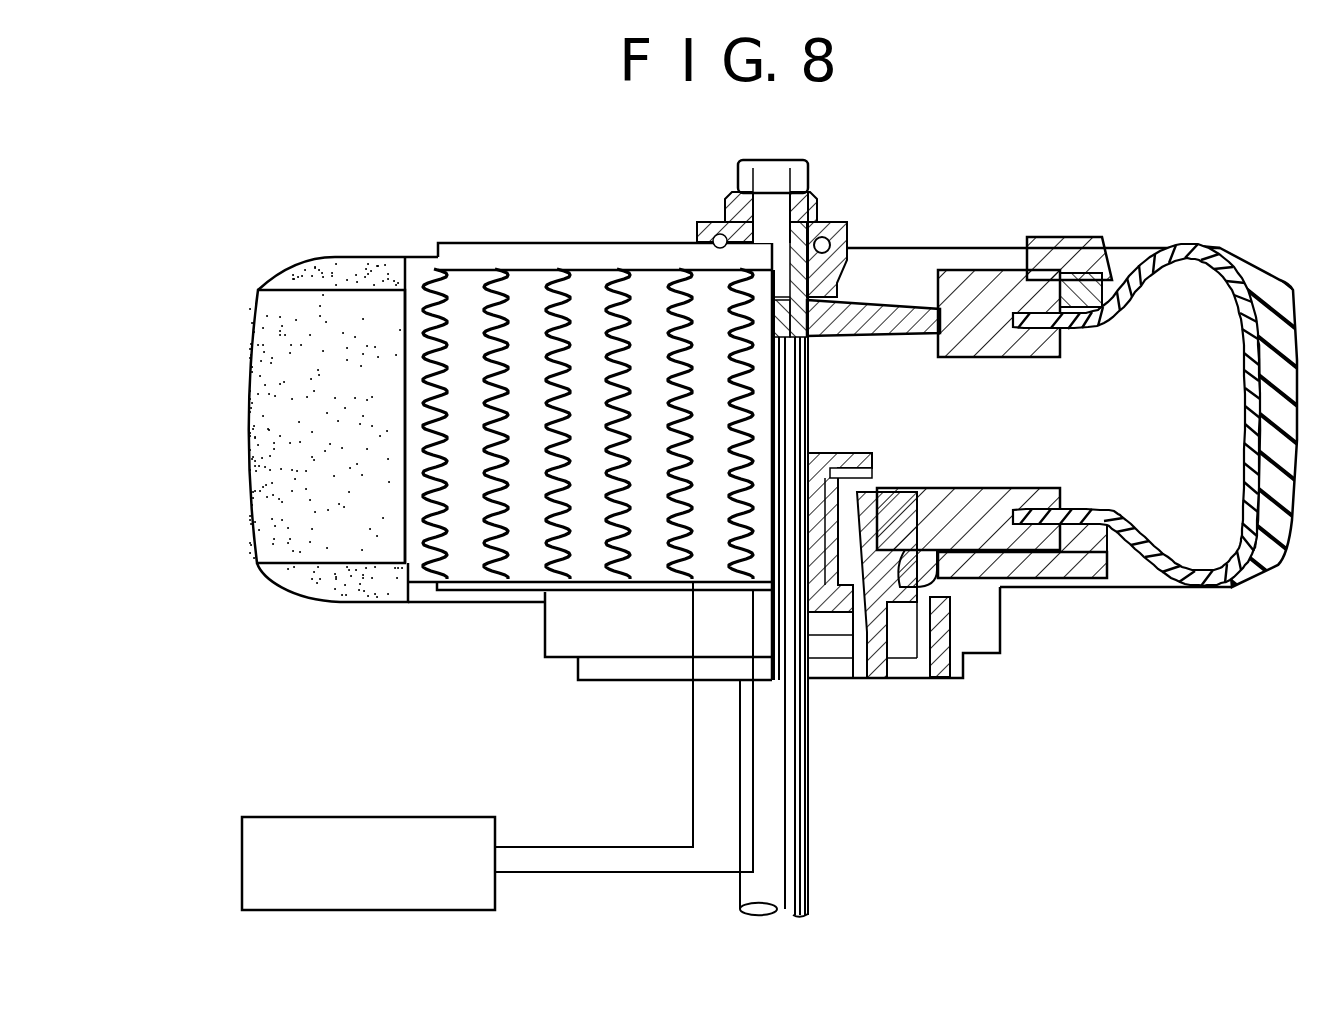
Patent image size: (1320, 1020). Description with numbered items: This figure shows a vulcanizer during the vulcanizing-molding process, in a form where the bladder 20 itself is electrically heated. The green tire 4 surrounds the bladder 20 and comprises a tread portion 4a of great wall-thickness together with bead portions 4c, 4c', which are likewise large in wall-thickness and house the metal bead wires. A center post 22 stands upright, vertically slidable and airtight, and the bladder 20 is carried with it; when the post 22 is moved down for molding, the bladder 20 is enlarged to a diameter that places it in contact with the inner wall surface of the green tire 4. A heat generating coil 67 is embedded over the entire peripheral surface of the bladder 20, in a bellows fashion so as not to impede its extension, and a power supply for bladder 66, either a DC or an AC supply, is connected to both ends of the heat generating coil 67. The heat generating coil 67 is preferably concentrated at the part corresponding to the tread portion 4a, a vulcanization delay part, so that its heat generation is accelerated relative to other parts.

The green tire 4 is at (285, 266).
The tread portion 4a is at (258, 418).
The bead portion 4c is at (332, 612).
The bead portion 4c' is at (331, 240).
The bladder 20 is at (488, 266).
The heat generating coil 67 is at (573, 295).
The power supply for bladder 66 is at (393, 818).
The center post 22 is at (745, 885).